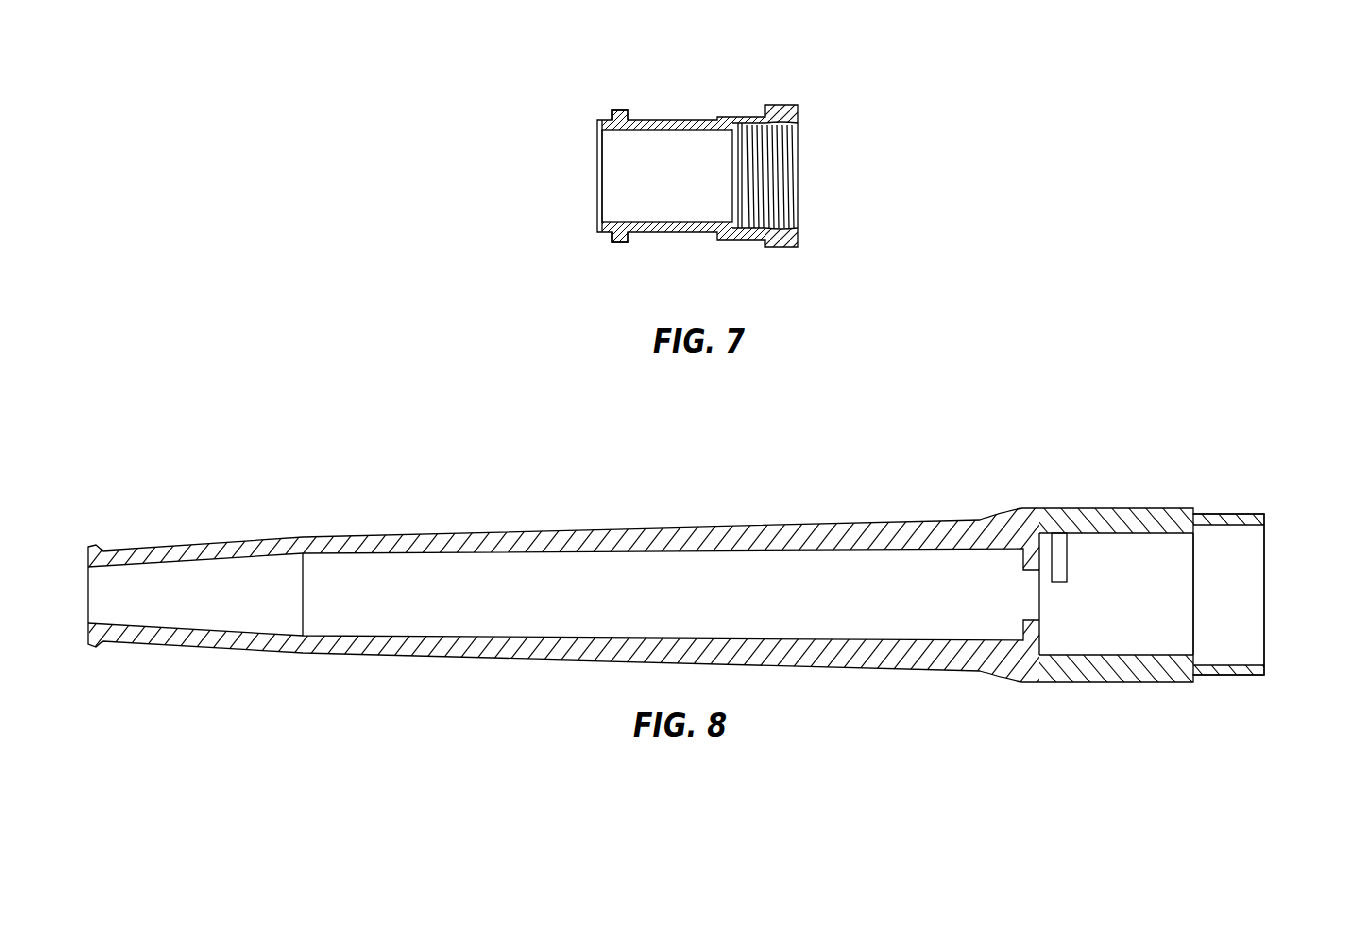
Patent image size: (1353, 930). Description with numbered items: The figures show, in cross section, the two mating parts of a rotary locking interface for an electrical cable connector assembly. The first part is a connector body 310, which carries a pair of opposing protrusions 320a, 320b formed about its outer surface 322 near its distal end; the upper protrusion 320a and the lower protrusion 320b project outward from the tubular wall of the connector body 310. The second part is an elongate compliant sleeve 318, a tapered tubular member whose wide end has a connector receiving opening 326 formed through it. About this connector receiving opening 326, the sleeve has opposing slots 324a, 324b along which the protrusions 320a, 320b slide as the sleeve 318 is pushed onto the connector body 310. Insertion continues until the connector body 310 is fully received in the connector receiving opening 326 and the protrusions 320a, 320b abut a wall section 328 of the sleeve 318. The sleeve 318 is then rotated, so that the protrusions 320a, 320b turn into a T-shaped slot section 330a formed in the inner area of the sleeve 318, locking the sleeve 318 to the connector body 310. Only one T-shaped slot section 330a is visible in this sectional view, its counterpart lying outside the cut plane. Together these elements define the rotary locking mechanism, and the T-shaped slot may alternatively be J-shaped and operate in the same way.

In FIG. 7, the connector body 310 is at (572, 81).
In FIG. 7, the protrusion 320a is at (618, 110).
In FIG. 7, the protrusion 320b is at (618, 242).
In FIG. 7, the outer surface 322 is at (684, 118).
In FIG. 8, the elongate compliant sleeve 318 is at (452, 481).
In FIG. 8, the slot 324a is at (1130, 545).
In FIG. 8, the slot 324b is at (1132, 645).
In FIG. 8, the connector receiving opening 326 is at (1270, 581).
In FIG. 8, the wall section 328 is at (1033, 630).
In FIG. 8, the T-shaped slot section 330a is at (1058, 550).